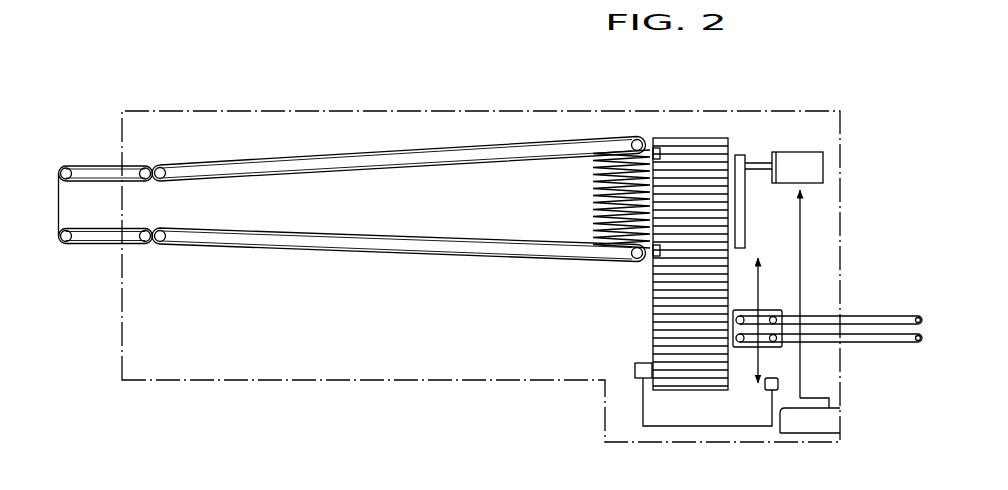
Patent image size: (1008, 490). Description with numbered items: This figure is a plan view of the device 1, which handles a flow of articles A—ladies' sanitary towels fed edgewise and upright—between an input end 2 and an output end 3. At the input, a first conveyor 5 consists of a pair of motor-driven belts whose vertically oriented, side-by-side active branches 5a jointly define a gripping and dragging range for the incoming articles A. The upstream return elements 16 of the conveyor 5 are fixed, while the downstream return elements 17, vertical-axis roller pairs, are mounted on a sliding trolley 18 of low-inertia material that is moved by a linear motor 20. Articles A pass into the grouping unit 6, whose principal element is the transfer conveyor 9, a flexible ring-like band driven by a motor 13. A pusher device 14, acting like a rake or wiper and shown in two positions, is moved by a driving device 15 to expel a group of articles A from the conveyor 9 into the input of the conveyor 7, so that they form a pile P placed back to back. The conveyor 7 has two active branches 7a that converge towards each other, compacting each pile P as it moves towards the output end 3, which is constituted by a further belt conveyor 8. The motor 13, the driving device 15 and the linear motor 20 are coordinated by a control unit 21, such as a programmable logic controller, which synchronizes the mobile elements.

The device 1 is at (233, 103).
The input end 2 is at (848, 270).
The output end 3 is at (82, 162).
The first conveyor 5 is at (848, 371).
The active branches 5a is at (873, 318).
The grouping unit 6 is at (630, 281).
The conveyor 7 is at (320, 150).
The active branches 7a is at (424, 238).
The belt conveyor 8 is at (87, 248).
The conveyor 9 is at (701, 182).
The motor 13 is at (634, 370).
The pusher device 14 is at (659, 150).
The driving device 15 is at (787, 163).
The return elements 16 is at (910, 332).
The return elements 17 is at (778, 334).
The sliding trolley 18 is at (790, 348).
The linear motor 20 is at (768, 392).
The control unit 21 is at (795, 412).
The pile P is at (585, 187).
The articles A is at (622, 153).